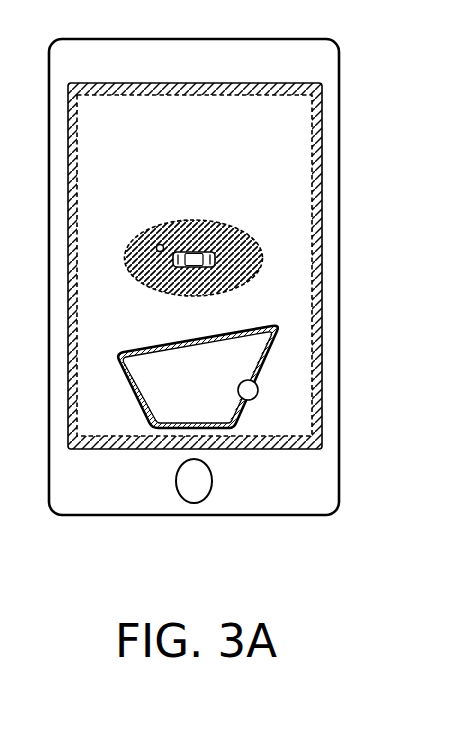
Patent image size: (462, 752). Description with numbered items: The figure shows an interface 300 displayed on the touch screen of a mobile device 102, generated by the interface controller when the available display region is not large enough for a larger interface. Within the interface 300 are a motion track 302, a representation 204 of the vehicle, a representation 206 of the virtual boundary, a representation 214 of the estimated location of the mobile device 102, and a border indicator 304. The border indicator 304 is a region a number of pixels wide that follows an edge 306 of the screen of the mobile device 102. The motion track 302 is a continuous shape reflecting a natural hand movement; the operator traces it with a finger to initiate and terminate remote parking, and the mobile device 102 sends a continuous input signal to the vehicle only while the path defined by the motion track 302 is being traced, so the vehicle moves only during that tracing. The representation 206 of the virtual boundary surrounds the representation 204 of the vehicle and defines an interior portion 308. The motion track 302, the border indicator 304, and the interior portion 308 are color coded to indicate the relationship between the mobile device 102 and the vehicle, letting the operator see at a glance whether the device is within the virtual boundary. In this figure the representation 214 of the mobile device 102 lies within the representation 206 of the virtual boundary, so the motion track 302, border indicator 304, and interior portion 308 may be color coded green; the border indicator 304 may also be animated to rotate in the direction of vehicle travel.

The mobile device 102 is at (339, 235).
The interface 300 is at (206, 85).
The edge of the screen 306 is at (322, 305).
The border indicator 304 is at (322, 390).
The representation of the virtual boundary 206 is at (228, 222).
The interior portion 308 is at (236, 278).
The representation of the vehicle 204 is at (187, 251).
The representation of the estimated location of the mobile device 214 is at (160, 252).
The motion track 302 is at (140, 378).